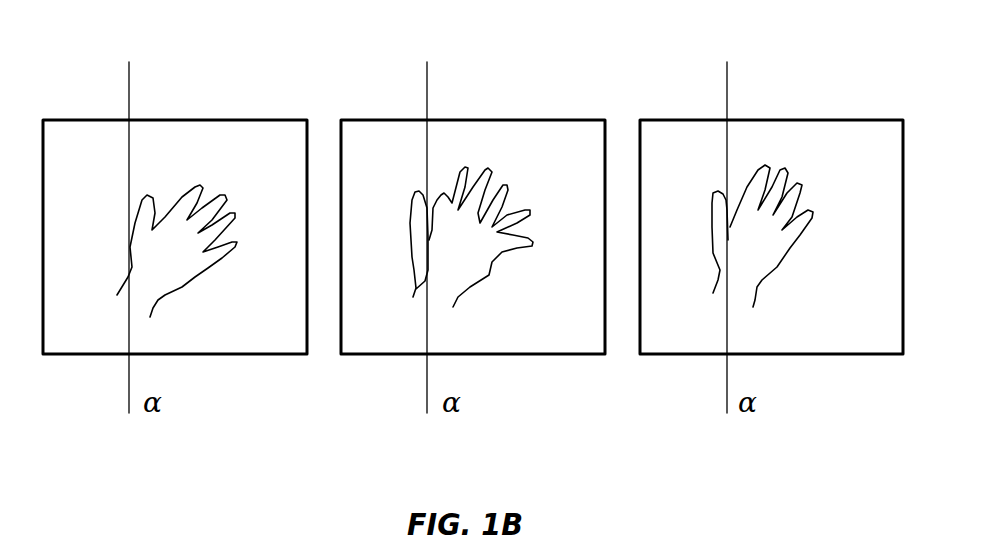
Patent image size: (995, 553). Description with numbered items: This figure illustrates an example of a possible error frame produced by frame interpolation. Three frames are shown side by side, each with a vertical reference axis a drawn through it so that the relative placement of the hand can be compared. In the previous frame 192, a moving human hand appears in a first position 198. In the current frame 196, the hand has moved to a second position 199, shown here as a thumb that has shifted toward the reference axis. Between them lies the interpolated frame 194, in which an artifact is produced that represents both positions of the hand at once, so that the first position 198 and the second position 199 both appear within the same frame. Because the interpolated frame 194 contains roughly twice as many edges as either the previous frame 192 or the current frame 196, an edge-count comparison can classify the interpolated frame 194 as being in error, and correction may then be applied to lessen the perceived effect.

The previous frame 192 is at (218, 118).
The interpolated frame 194 is at (502, 118).
The current frame 196 is at (803, 118).
The first position 198 is at (195, 277).
The second position 199 is at (410, 222).